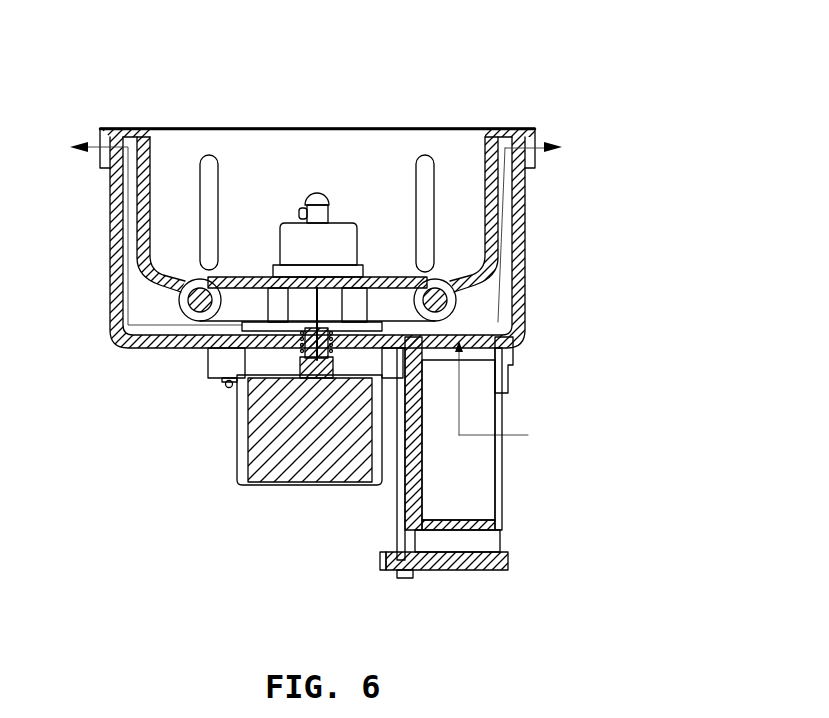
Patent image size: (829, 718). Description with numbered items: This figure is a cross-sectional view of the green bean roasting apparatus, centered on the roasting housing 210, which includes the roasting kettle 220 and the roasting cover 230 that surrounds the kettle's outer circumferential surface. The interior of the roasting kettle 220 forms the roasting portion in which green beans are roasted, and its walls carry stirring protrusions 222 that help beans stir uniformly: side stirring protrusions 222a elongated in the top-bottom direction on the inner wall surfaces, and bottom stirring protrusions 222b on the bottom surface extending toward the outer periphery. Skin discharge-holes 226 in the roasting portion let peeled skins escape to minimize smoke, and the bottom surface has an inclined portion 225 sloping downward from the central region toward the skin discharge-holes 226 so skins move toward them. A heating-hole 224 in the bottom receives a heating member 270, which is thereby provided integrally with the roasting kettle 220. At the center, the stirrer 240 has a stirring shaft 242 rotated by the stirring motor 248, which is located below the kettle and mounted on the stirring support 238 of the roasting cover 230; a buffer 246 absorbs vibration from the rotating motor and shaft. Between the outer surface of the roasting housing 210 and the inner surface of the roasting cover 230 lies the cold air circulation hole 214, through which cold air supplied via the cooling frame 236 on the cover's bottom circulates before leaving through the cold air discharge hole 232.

The roasting housing 210 is at (578, 46).
The roasting kettle 220 is at (452, 120).
The roasting cover 230 is at (532, 120).
The cold air circulation hole 214 is at (131, 165).
The cold air discharge hole 232 is at (100, 140).
The stirring protrusions 222 is at (308, 78).
The side stirring protrusions 222a is at (208, 173).
The bottom stirring protrusions 222b is at (245, 270).
The skin discharge-holes 226 is at (165, 283).
The inclined portion 225 is at (188, 301).
The heating-hole 224 is at (195, 318).
The stirring shaft 242 is at (318, 193).
The stirrer 240 is at (351, 214).
The heating member 270 is at (303, 358).
The stirring support 238 is at (232, 388).
The buffer 246 is at (240, 468).
The stirring motor 248 is at (300, 470).
The cooling frame 236 is at (503, 393).